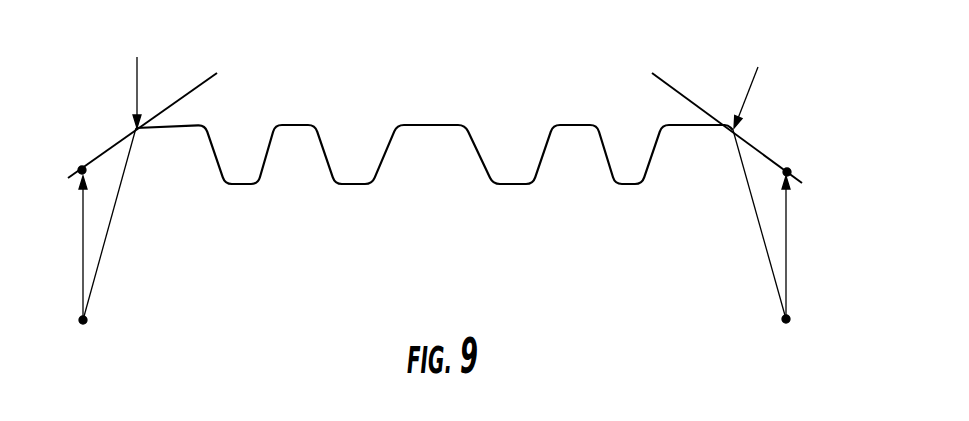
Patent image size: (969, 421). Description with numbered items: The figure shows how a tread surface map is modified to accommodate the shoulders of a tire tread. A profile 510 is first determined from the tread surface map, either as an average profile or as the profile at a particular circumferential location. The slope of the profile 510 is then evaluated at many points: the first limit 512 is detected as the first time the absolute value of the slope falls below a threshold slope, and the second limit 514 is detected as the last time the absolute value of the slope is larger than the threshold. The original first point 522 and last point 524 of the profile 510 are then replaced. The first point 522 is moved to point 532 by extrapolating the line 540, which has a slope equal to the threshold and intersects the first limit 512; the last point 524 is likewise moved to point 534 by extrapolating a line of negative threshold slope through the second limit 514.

The profile 510 is at (447, 120).
The first limit 512 is at (141, 132).
The second limit 514 is at (728, 133).
The first point 522 is at (81, 328).
The last point 524 is at (789, 328).
The point 532 is at (81, 167).
The point 534 is at (789, 167).
The line 540 is at (217, 73).